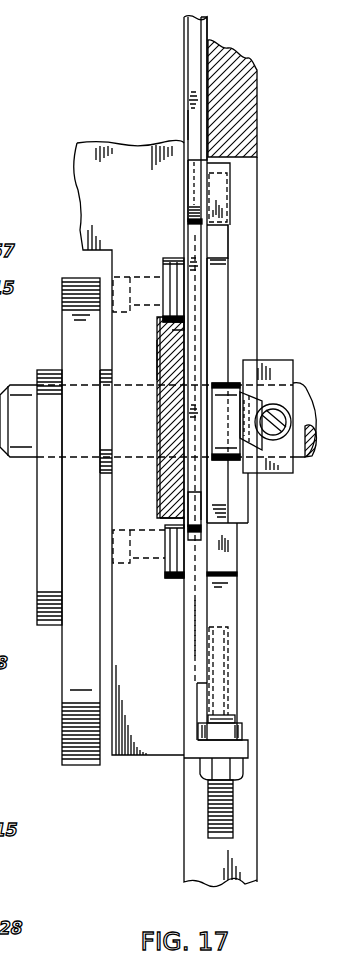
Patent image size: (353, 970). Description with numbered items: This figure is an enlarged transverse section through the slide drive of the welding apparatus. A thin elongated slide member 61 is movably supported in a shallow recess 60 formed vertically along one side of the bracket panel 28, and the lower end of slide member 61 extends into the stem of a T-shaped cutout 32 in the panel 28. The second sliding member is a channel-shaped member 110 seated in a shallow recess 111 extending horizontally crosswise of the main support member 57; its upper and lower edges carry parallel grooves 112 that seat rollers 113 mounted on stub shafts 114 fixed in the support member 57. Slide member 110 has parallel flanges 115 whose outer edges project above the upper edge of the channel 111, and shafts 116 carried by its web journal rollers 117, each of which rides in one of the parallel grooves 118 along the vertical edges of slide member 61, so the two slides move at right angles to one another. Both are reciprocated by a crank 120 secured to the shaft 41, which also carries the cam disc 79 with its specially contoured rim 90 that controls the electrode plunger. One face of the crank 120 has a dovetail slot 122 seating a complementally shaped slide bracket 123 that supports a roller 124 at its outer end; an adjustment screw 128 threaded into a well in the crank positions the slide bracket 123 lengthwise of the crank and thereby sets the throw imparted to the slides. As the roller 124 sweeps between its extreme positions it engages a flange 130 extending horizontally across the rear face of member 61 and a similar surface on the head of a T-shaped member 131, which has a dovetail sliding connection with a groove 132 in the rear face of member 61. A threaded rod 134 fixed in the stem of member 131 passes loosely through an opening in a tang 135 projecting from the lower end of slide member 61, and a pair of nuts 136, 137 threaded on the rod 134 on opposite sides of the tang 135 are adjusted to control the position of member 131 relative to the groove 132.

The bracket panel 28 is at (257, 105).
The T-shaped cutout 32 is at (245, 164).
The shaft 41 is at (15, 392).
The support member 57 is at (82, 148).
The shallow recess 60 is at (207, 78).
The slide member 61 is at (182, 37).
The cam disc 79 is at (36, 493).
The contoured rim 90 is at (44, 528).
The channel-shaped slide member 110 is at (156, 343).
The shallow recess 111 is at (159, 366).
The parallel grooves 112 is at (176, 329).
The rollers 113 is at (172, 295).
The stub shafts 114 is at (137, 277).
The parallel flanges 115 is at (233, 277).
The shafts 116 is at (187, 180).
The rollers 117 is at (194, 221).
The parallel grooves 118 is at (193, 131).
The crank 120 is at (306, 456).
The dovetail slot 122 is at (258, 462).
The slide bracket 123 is at (263, 372).
The roller 124 is at (221, 382).
The adjustment screw 128 is at (306, 388).
The flange 130 is at (219, 229).
The T-shaped member 131 is at (233, 529).
The groove 132 is at (196, 630).
The threaded rod 134 is at (233, 812).
The tang 135 is at (250, 748).
The nut 136 is at (247, 736).
The nut 137 is at (246, 767).